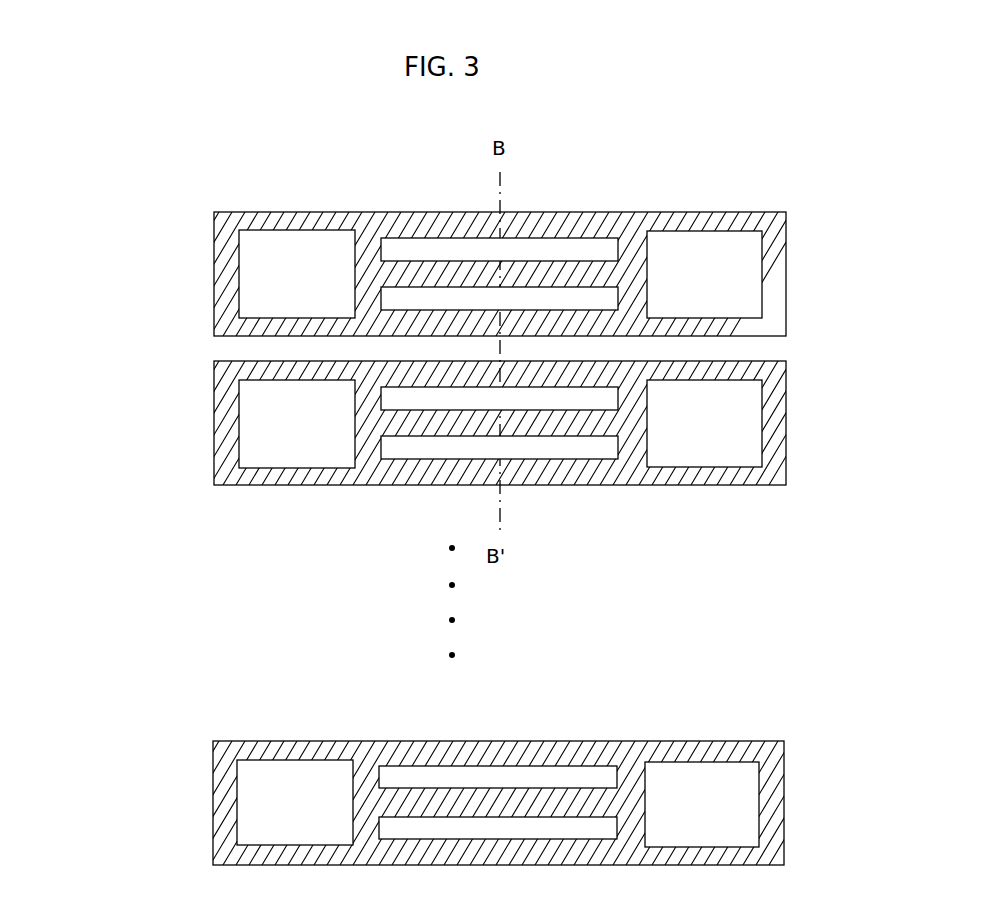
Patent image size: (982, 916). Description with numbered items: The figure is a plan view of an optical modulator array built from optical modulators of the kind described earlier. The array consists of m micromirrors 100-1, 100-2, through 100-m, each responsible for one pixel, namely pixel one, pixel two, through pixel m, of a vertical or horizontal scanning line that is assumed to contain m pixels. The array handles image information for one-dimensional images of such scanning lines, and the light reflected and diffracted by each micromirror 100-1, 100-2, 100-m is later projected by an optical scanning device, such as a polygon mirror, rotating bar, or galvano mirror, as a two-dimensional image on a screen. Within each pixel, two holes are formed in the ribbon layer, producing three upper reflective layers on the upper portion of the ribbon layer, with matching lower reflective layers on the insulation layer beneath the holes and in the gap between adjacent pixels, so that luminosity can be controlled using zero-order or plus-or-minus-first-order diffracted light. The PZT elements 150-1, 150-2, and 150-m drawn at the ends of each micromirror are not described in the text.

The micromirror 100-1 is at (206, 335).
The micromirror 100-2 is at (206, 484).
The micromirror 100-m is at (206, 864).
The piezoelectric (PZT) actuator of pixel #1 150-1 is at (750, 280).
The piezoelectric (PZT) actuator of pixel #2 150-2 is at (750, 425).
The piezoelectric (PZT) actuator of pixel #m 150-m is at (743, 802).